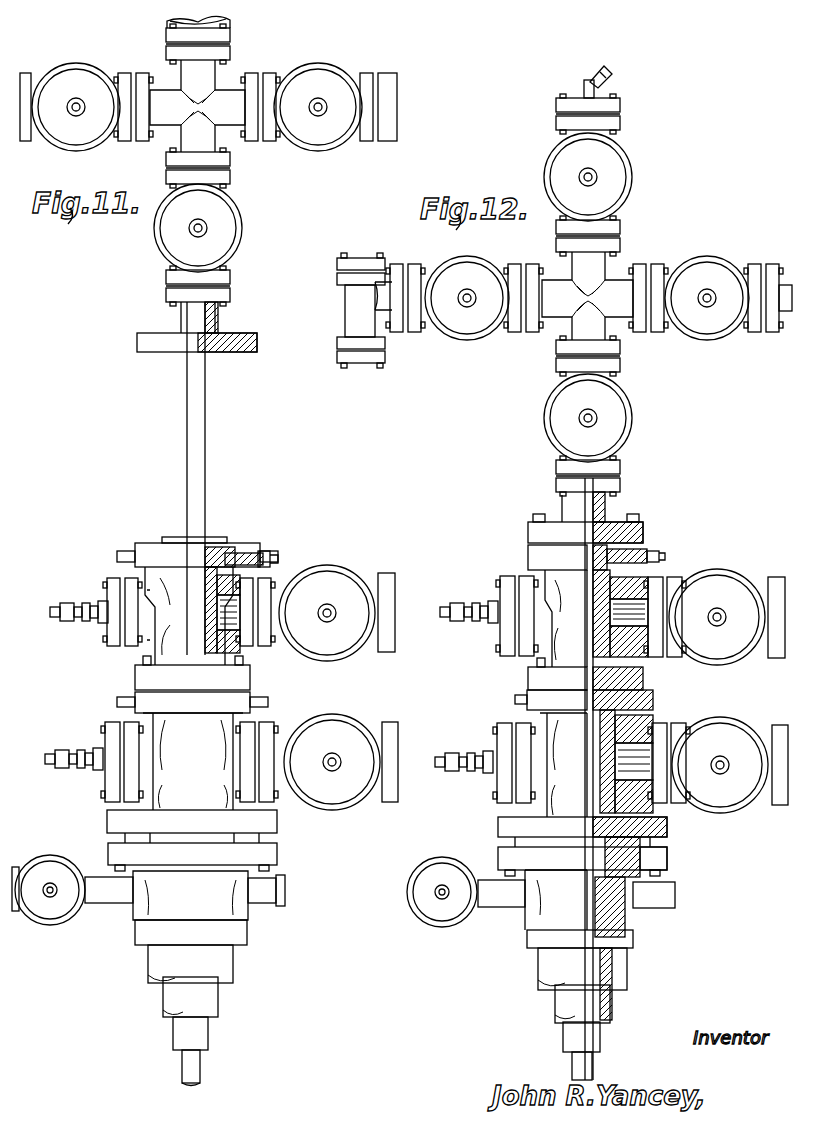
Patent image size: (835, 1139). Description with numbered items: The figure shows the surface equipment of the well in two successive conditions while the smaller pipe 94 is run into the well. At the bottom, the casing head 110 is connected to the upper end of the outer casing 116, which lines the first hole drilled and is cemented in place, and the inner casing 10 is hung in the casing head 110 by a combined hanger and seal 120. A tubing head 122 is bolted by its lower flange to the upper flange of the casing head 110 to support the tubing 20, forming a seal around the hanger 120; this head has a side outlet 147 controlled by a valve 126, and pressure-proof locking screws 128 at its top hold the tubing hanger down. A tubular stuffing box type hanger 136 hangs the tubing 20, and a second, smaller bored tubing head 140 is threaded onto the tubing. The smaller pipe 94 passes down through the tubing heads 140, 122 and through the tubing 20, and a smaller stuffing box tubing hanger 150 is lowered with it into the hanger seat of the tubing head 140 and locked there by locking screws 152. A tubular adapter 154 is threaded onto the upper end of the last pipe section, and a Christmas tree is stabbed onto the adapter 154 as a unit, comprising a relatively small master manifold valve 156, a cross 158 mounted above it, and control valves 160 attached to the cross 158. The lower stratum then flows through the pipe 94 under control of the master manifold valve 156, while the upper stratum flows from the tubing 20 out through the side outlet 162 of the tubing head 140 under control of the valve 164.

In FIG. 11, the inner casing 10 is at (210, 1006).
In FIG. 12, the inner casing 10 is at (611, 1011).
In FIG. 11, the tubing 20 is at (204, 1034).
In FIG. 12, the tubing 20 is at (600, 1046).
In FIG. 11, the smaller pipe 94 is at (206, 433).
In FIG. 12, the smaller pipe 94 is at (576, 1066).
In FIG. 11, the casing head 110 is at (160, 906).
In FIG. 12, the casing head 110 is at (545, 916).
In FIG. 11, the outer casing 116 is at (230, 964).
In FIG. 12, the outer casing 116 is at (627, 981).
In FIG. 12, the combined hanger and seal 120 is at (640, 856).
In FIG. 11, the tubing head 122 is at (165, 794).
In FIG. 12, the tubing head 122 is at (548, 800).
In FIG. 12, the valve 126 is at (740, 797).
In FIG. 11, the locking screws 128 is at (268, 702).
In FIG. 12, the stuffing box type hanger 136 is at (600, 713).
In FIG. 11, the second tubing head 140 is at (172, 641).
In FIG. 12, the second tubing head 140 is at (560, 646).
In FIG. 12, the side outlet 147 is at (620, 768).
In FIG. 11, the stuffing box tubing hanger 150 is at (220, 547).
In FIG. 12, the stuffing box tubing hanger 150 is at (592, 567).
In FIG. 11, the locking screws 152 is at (242, 553).
In FIG. 12, the locking screws 152 is at (648, 556).
In FIG. 11, the tubular adapter 154 is at (245, 352).
In FIG. 12, the tubular adapter 154 is at (640, 523).
In FIG. 11, the master manifold valve 156 is at (225, 246).
In FIG. 12, the master manifold valve 156 is at (633, 430).
In FIG. 11, the cross 158 is at (226, 100).
In FIG. 11, the control valves 160 is at (88, 136).
In FIG. 11, the side outlet 162 is at (235, 606).
In FIG. 12, the side outlet 162 is at (620, 620).
In FIG. 11, the valve 164 is at (345, 583).
In FIG. 12, the valve 164 is at (725, 652).